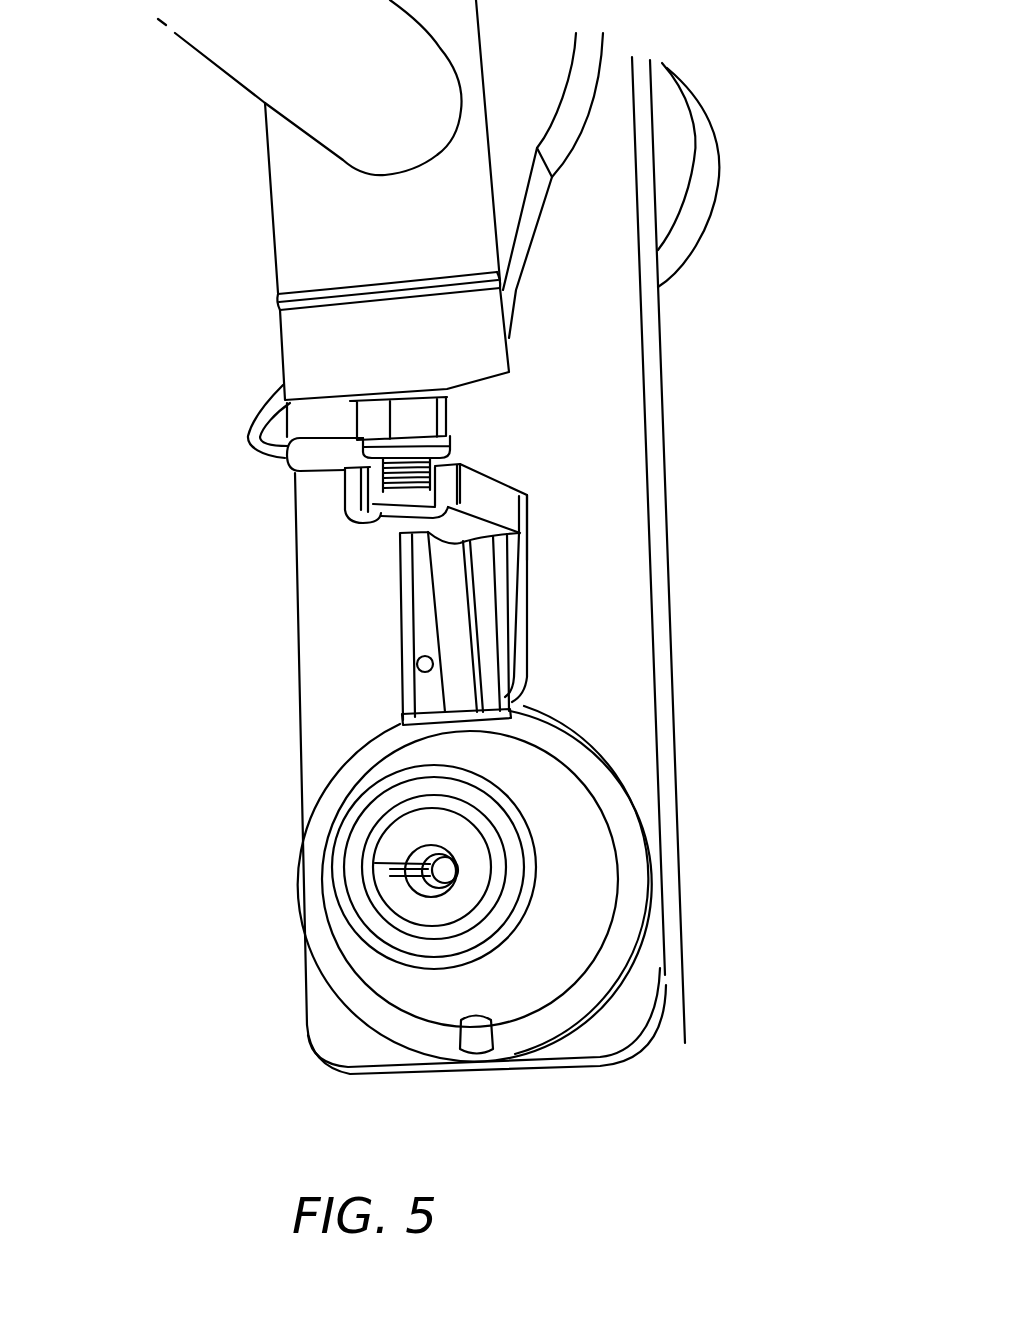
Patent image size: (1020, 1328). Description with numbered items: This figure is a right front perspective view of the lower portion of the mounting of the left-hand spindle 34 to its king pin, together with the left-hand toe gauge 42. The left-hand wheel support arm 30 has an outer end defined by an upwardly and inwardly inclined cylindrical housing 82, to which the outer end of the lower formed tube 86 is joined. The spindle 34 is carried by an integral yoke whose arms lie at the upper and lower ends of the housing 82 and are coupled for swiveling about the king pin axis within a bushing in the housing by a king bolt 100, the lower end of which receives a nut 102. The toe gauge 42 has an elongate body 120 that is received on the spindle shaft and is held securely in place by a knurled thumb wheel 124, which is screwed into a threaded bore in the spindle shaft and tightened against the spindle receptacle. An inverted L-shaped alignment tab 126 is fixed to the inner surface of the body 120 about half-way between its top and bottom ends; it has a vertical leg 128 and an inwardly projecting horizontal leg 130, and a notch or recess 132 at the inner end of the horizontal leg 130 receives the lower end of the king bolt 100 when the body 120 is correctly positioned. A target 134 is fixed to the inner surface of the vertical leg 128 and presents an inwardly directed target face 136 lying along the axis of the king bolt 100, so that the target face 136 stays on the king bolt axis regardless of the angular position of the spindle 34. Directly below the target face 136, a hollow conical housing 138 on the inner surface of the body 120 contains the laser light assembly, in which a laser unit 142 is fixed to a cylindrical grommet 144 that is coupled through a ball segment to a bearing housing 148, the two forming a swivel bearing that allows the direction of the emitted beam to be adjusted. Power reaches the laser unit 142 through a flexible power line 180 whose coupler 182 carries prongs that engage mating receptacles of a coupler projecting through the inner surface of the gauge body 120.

The left-hand wheel support arm 30 is at (233, 85).
The lower formed tube 86 is at (358, 79).
The cylindrical housing 82 is at (395, 244).
The left-hand spindle 34 is at (530, 257).
The left-hand toe gauge 42 is at (677, 557).
The knurled thumb wheel 124 is at (707, 187).
The nut 102 is at (452, 394).
The king bolt 100 is at (447, 452).
The flexible power line 180 is at (248, 423).
The coupler 182 is at (310, 464).
The horizontal leg 130 is at (498, 488).
The notch or recess 132 is at (397, 531).
The inverted L-shaped alignment tab 126 is at (530, 520).
The target 134 is at (401, 572).
The target face 136 is at (423, 628).
The vertical leg 128 is at (528, 620).
The hollow conical housing 138 is at (600, 916).
The bearing housing 148 is at (458, 832).
The laser unit 142 is at (460, 869).
The elongate body 120 is at (662, 1043).
The cylindrical grommet 144 is at (470, 1031).